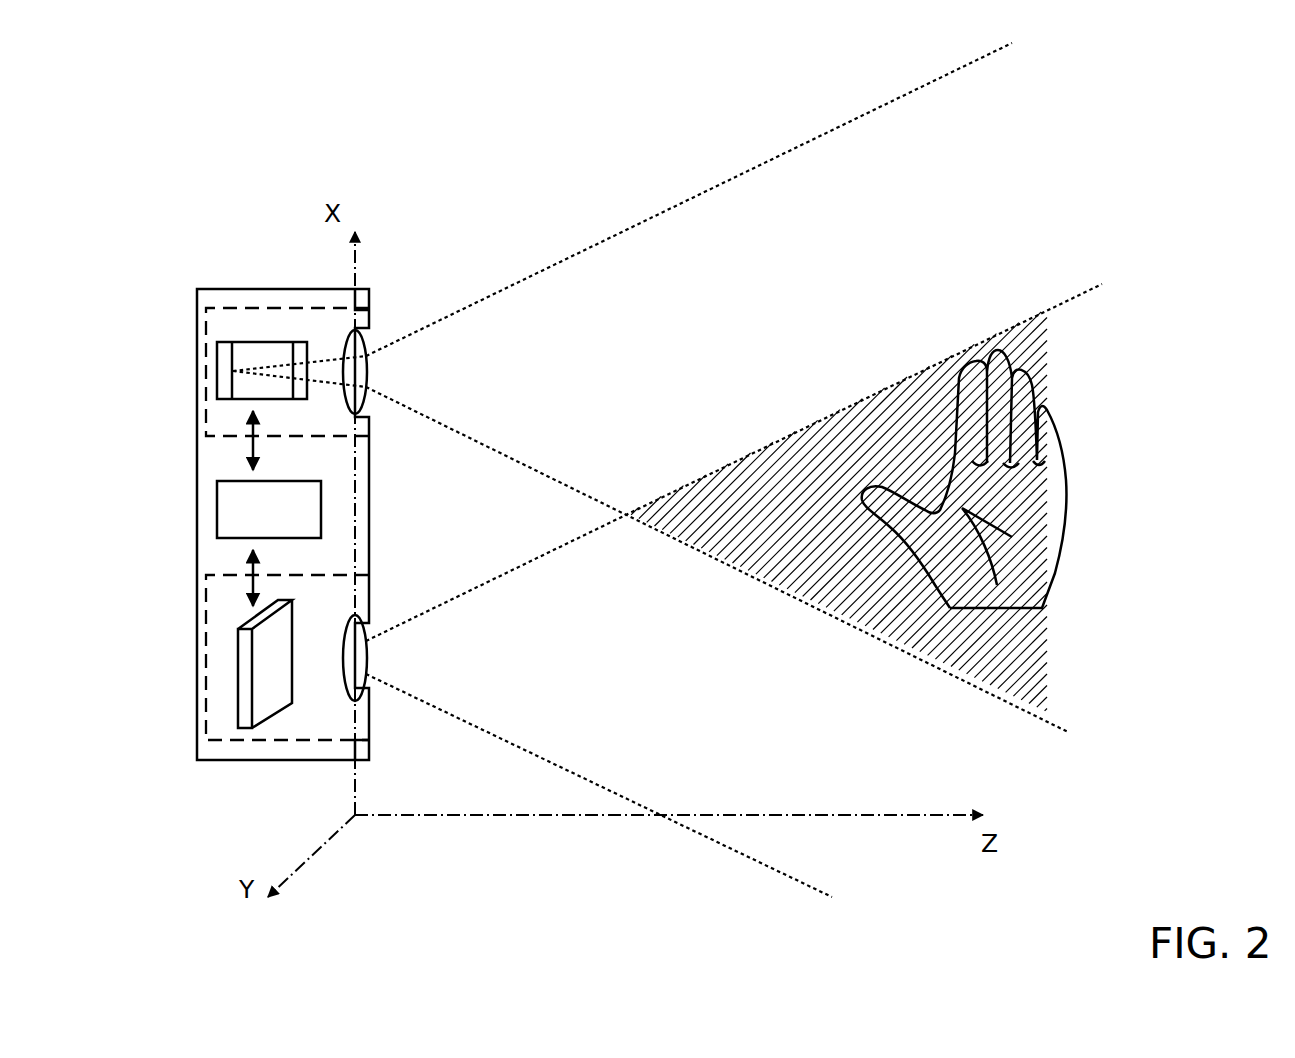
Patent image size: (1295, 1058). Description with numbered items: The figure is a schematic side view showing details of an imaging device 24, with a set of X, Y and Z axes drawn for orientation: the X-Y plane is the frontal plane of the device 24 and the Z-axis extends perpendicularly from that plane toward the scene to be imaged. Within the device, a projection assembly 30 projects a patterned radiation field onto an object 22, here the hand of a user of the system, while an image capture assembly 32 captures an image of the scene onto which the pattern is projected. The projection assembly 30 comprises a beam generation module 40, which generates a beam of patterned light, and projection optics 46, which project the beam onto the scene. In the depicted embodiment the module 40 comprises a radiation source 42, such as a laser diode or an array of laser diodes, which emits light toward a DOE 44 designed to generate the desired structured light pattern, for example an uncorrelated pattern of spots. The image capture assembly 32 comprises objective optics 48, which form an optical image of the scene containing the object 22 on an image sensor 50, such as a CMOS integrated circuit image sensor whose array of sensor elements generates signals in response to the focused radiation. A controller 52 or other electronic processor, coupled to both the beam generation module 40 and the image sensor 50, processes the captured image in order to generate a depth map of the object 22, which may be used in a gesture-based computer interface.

The object 22 is at (1067, 425).
The imaging device 24 is at (228, 289).
The projection assembly 30 is at (206, 388).
The image capture assembly 32 is at (275, 740).
The beam generation module 40 is at (276, 317).
The radiation source 42 is at (217, 354).
The DOE 44 is at (300, 342).
The projection optics 46 is at (366, 370).
The objective optics 48 is at (366, 656).
The image sensor 50 is at (238, 648).
The controller 52 is at (217, 528).